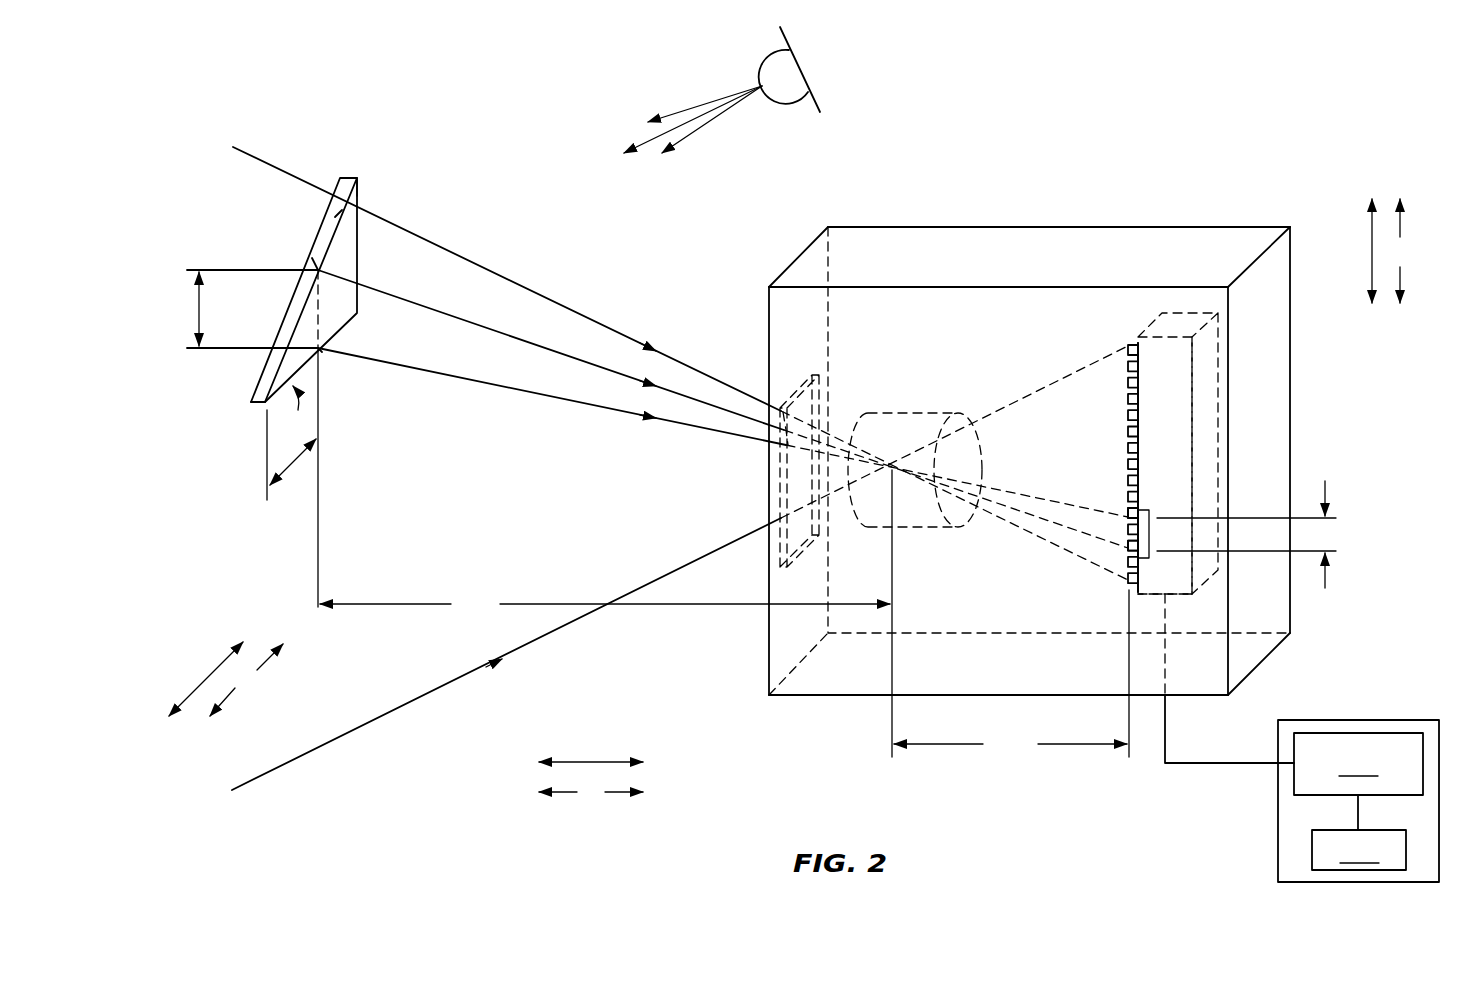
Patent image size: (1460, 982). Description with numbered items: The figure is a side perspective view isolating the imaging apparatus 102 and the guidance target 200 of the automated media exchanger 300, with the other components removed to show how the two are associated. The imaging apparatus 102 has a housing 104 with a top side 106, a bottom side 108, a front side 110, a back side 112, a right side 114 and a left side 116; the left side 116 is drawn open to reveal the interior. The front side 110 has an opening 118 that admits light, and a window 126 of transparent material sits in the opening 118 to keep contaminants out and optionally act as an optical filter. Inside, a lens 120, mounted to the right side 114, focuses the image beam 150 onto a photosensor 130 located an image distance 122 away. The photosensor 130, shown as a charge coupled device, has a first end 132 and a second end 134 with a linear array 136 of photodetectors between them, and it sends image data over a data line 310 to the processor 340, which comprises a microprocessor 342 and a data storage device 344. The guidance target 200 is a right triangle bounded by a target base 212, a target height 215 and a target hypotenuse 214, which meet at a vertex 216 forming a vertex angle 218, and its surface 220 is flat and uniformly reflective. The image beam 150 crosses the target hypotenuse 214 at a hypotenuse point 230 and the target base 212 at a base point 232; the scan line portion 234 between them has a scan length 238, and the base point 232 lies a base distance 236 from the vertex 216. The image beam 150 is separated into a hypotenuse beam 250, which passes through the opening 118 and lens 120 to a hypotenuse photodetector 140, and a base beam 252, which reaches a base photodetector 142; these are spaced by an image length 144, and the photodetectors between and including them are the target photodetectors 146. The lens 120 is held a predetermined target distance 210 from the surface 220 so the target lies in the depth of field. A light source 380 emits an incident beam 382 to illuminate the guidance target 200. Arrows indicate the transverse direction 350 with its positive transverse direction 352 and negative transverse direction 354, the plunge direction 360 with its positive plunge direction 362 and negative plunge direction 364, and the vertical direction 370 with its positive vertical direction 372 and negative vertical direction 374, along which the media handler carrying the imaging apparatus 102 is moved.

The imaging apparatus 102 is at (1031, 419).
The housing 104 is at (1058, 231).
The top side 106 is at (1000, 250).
The bottom side 108 is at (1266, 670).
The front side 110 is at (796, 254).
The back side 112 is at (1262, 430).
The right side 114 is at (916, 224).
The left side 116 is at (792, 634).
The opening 118 is at (809, 376).
The lens 120 is at (932, 412).
The image distance 122 is at (1011, 674).
The window 126 is at (792, 396).
The photosensor 130 is at (1205, 355).
The first end 132 is at (1186, 312).
The second end 134 is at (1192, 594).
The linear array 136 is at (1131, 338).
The hypotenuse photodetector 140 is at (1128, 556).
The base photodetector 142 is at (1128, 514).
The image length 144 is at (1340, 535).
The target photodetectors 146 is at (1150, 534).
The image beam 150 is at (505, 278).
The guidance target 200 is at (325, 328).
The target distance 210 is at (605, 552).
The target base 212 is at (330, 337).
The target hypotenuse 214 is at (335, 217).
The target height 215 is at (358, 196).
The vertex 216 is at (250, 404).
The vertex angle 218 is at (268, 371).
The surface 220 is at (345, 243).
The hypotenuse point 230 is at (316, 258).
The base point 232 is at (320, 352).
The scan line portion 234 is at (316, 312).
The base distance 236 is at (297, 467).
The scan length 238 is at (198, 306).
The hypotenuse beam 250 is at (524, 340).
The base beam 252 is at (540, 394).
The automated media exchanger 300 is at (1032, 100).
The data line 310 is at (1192, 762).
The processor 340 is at (1358, 768).
The microprocessor 342 is at (1358, 764).
The data storage device 344 is at (1359, 850).
The transverse direction 350 is at (205, 680).
The positive transverse direction 352 is at (262, 672).
The negative transverse direction 354 is at (232, 696).
The plunge direction 360 is at (592, 762).
The positive plunge direction 362 is at (565, 800).
The negative plunge direction 364 is at (620, 800).
The vertical direction 370 is at (1372, 250).
The positive vertical direction 372 is at (1400, 225).
The negative vertical direction 374 is at (1400, 278).
The light source 380 is at (702, 90).
The incident beam 382 is at (762, 67).